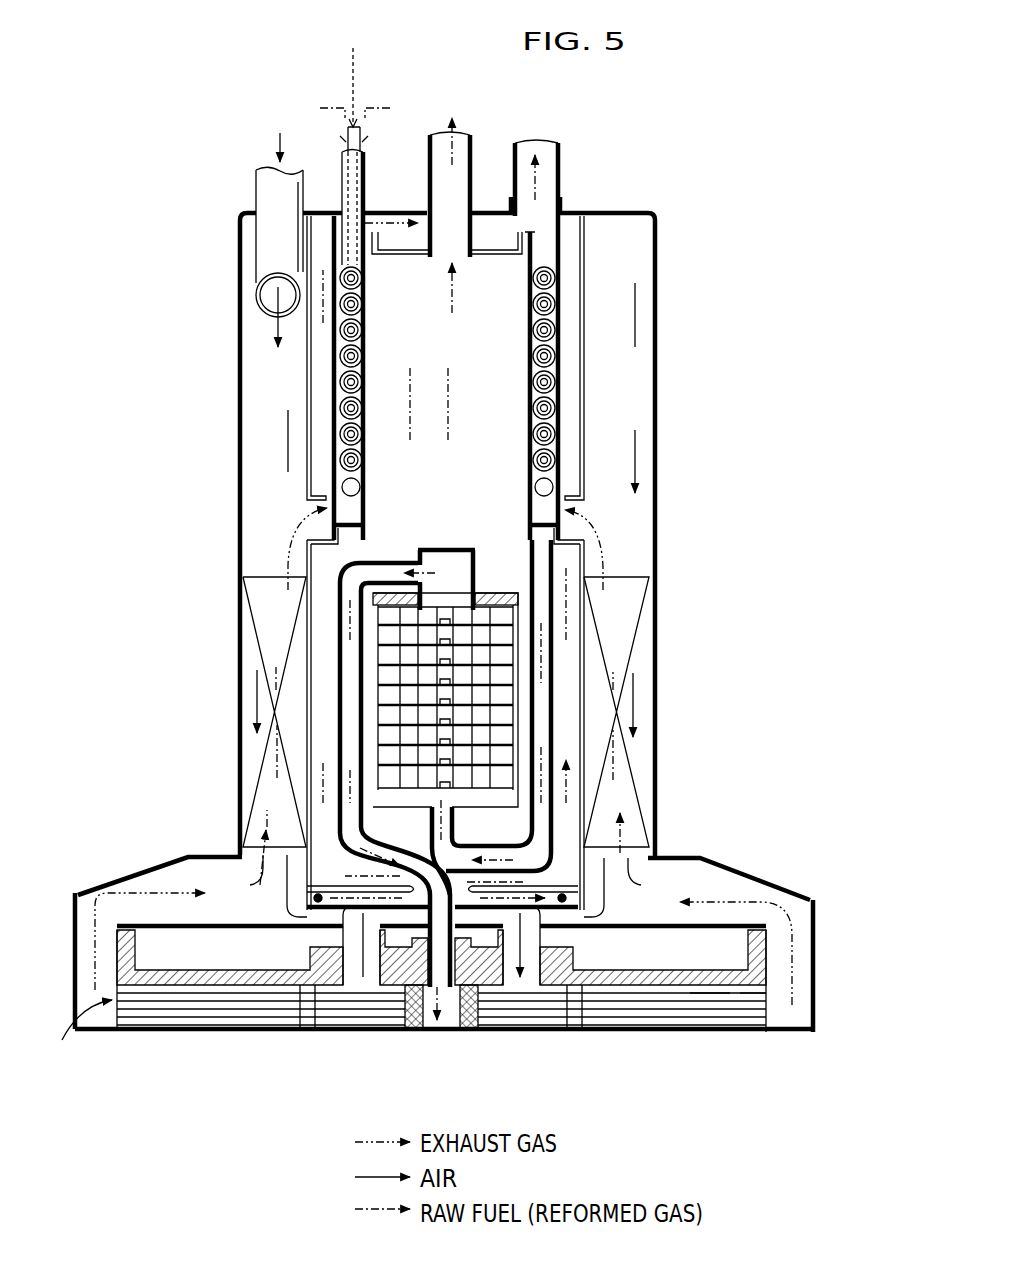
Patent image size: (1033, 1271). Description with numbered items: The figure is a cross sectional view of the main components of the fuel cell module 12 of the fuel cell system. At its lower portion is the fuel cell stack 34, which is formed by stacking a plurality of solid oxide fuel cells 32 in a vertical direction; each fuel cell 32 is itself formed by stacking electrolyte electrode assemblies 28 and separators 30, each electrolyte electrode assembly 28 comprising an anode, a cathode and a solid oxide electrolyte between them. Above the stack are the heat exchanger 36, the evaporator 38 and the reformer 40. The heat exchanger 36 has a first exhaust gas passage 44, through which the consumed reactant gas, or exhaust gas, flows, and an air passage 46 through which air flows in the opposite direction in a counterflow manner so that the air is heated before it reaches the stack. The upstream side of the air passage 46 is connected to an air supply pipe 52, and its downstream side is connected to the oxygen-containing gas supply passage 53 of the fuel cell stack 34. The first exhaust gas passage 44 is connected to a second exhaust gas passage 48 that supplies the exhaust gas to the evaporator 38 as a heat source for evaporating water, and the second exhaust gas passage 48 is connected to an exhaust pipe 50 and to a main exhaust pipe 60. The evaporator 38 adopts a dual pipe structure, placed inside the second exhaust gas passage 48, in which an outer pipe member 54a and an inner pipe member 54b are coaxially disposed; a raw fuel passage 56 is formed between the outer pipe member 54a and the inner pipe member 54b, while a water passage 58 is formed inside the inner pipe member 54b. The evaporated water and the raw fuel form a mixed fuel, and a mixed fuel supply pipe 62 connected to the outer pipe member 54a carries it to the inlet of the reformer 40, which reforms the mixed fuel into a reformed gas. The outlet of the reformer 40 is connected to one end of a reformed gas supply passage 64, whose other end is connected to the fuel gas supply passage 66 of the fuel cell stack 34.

The fuel cell module 12 is at (213, 109).
The electrolyte electrode assembly 28 is at (713, 1025).
The separator 30 is at (760, 1042).
The solid oxide fuel cell 32 is at (735, 1061).
The fuel cell stack 34 is at (418, 984).
The heat exchanger 36 is at (237, 636).
The evaporator 38 is at (405, 378).
The reformer 40 is at (370, 648).
The first exhaust gas passage 44 is at (278, 770).
The air passage 46 is at (244, 731).
The second exhaust gas passage 48 is at (295, 505).
The exhaust pipe 50 is at (470, 168).
The air supply pipe 52 is at (280, 198).
The oxygen-containing gas supply passage 53 is at (365, 1005).
The outer pipe member 54a is at (350, 175).
The inner pipe member 54b is at (362, 137).
The raw fuel passage 56 is at (362, 280).
The water passage 58 is at (350, 68).
The main exhaust pipe 60 is at (558, 165).
The mixed fuel supply pipe 62 is at (548, 684).
The reformed gas supply passage 64 is at (340, 622).
The fuel gas supply passage 66 is at (423, 1012).